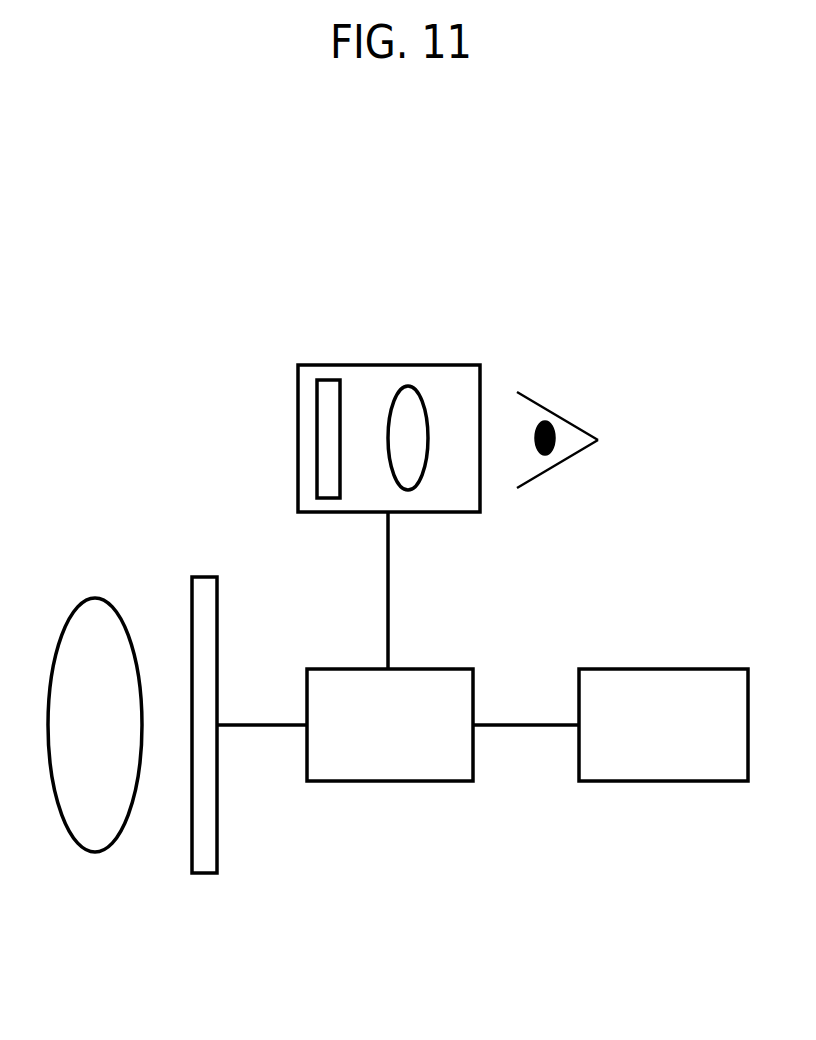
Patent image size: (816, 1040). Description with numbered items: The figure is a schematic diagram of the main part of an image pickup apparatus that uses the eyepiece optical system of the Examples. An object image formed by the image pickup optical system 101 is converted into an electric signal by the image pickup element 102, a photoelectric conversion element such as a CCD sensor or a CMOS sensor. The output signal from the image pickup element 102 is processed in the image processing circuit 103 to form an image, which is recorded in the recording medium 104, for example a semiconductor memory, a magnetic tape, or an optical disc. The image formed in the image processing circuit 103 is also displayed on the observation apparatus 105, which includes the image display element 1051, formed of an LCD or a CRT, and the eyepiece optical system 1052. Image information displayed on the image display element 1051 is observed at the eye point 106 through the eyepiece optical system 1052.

The image pickup optical system 101 is at (118, 618).
The image pickup element 102 is at (217, 813).
The image processing circuit 103 is at (398, 782).
The recording medium 104 is at (653, 668).
The observation apparatus 105 is at (360, 365).
The image display element 1051 is at (322, 420).
The eyepiece optical system 1052 is at (412, 412).
The eye point 106 is at (543, 407).